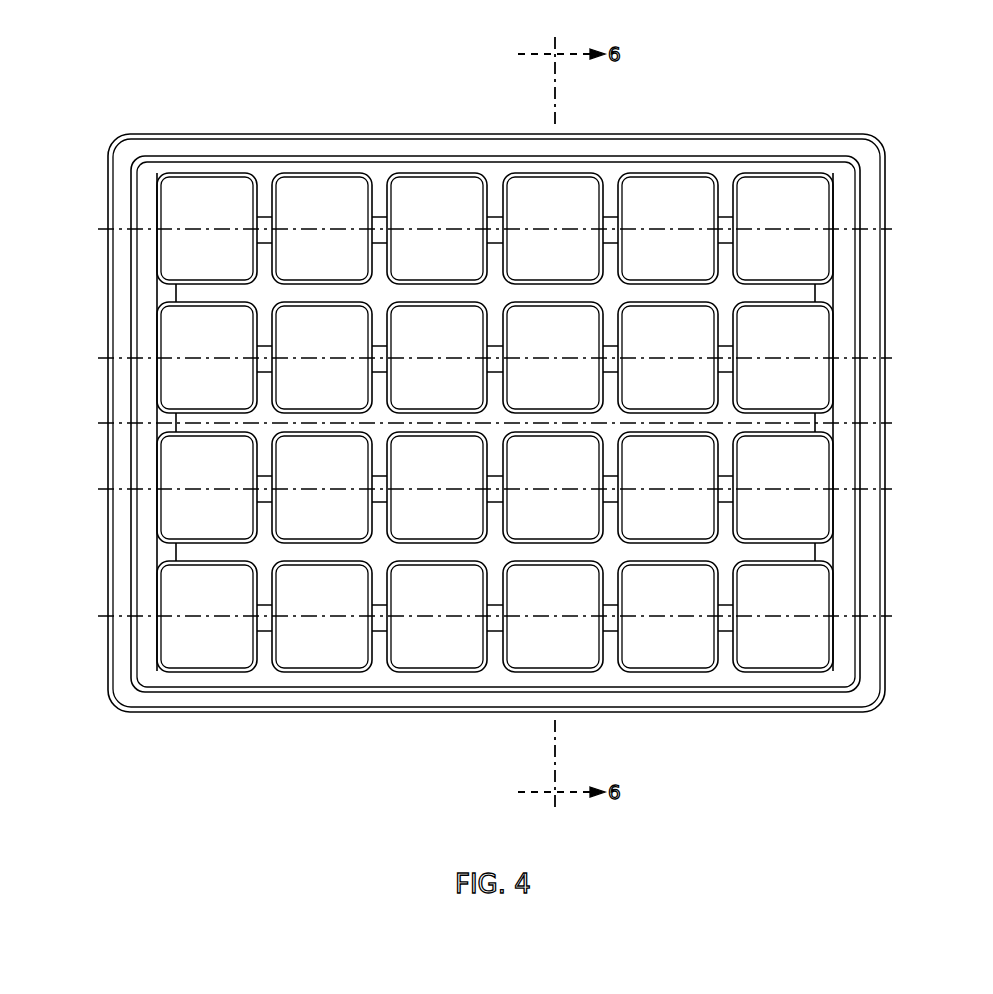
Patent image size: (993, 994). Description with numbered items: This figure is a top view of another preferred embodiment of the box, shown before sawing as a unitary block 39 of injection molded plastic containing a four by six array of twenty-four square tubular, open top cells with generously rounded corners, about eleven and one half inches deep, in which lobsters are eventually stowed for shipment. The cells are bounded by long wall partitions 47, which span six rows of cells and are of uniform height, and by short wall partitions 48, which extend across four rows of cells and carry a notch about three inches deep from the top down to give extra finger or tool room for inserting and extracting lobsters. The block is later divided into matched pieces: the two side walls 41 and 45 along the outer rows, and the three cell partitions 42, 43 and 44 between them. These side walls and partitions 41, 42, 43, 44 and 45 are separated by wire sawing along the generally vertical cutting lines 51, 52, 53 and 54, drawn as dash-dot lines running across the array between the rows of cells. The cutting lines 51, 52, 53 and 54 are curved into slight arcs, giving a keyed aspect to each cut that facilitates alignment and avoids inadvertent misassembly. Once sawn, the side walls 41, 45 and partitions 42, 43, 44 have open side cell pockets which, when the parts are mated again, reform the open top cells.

The tray 39 is at (886, 176).
The side wall 41 is at (385, 228).
The cell partition 42 is at (426, 347).
The cell partition 43 is at (435, 478).
The cell partition 44 is at (426, 604).
The side wall 45 is at (435, 616).
The long wall partition 47 is at (788, 311).
The short wall partition 48 is at (737, 247).
The vertical cutting line 51 is at (532, 222).
The vertical cutting line 52 is at (532, 349).
The vertical cutting line 53 is at (532, 482).
The vertical cutting line 54 is at (532, 607).